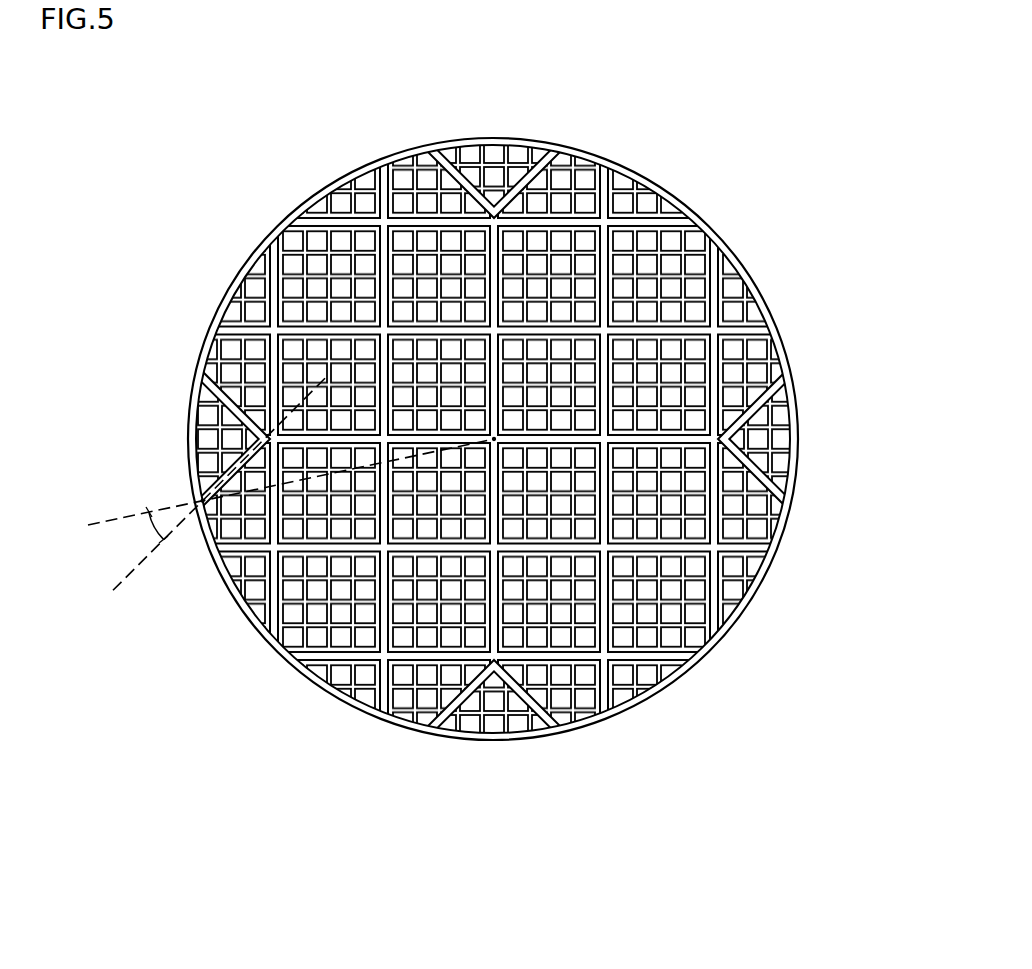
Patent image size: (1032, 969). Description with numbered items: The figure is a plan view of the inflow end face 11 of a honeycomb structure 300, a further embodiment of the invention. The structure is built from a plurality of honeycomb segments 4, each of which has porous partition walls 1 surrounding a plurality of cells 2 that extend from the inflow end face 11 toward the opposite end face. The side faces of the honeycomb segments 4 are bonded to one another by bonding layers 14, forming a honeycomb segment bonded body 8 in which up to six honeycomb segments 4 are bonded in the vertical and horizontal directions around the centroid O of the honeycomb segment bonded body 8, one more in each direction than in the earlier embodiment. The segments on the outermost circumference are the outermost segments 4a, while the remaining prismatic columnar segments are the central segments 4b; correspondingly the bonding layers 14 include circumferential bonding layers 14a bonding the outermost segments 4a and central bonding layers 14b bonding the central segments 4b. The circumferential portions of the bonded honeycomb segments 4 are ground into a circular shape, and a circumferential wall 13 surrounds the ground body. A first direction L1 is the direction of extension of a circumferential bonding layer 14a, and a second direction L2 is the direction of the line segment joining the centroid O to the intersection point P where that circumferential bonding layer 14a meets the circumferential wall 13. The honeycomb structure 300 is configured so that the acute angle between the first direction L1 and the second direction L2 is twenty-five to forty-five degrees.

The honeycomb structure 300 is at (843, 89).
The inflow end face 11 is at (300, 195).
The partition walls 1 is at (648, 288).
The cells 2 is at (705, 243).
The honeycomb segments 4 is at (499, 449).
The outermost segments 4a is at (483, 192).
The central segments 4b is at (604, 361).
The honeycomb segment bonded body 8 is at (735, 263).
The circumferential wall 13 is at (735, 612).
The bonding layers 14 is at (494, 465).
The circumferential bonding layers 14a is at (548, 168).
The central bonding layers 14b is at (420, 332).
The centroid O is at (494, 439).
The intersection point P is at (203, 501).
The first direction L1 is at (202, 498).
The second direction L2 is at (272, 492).